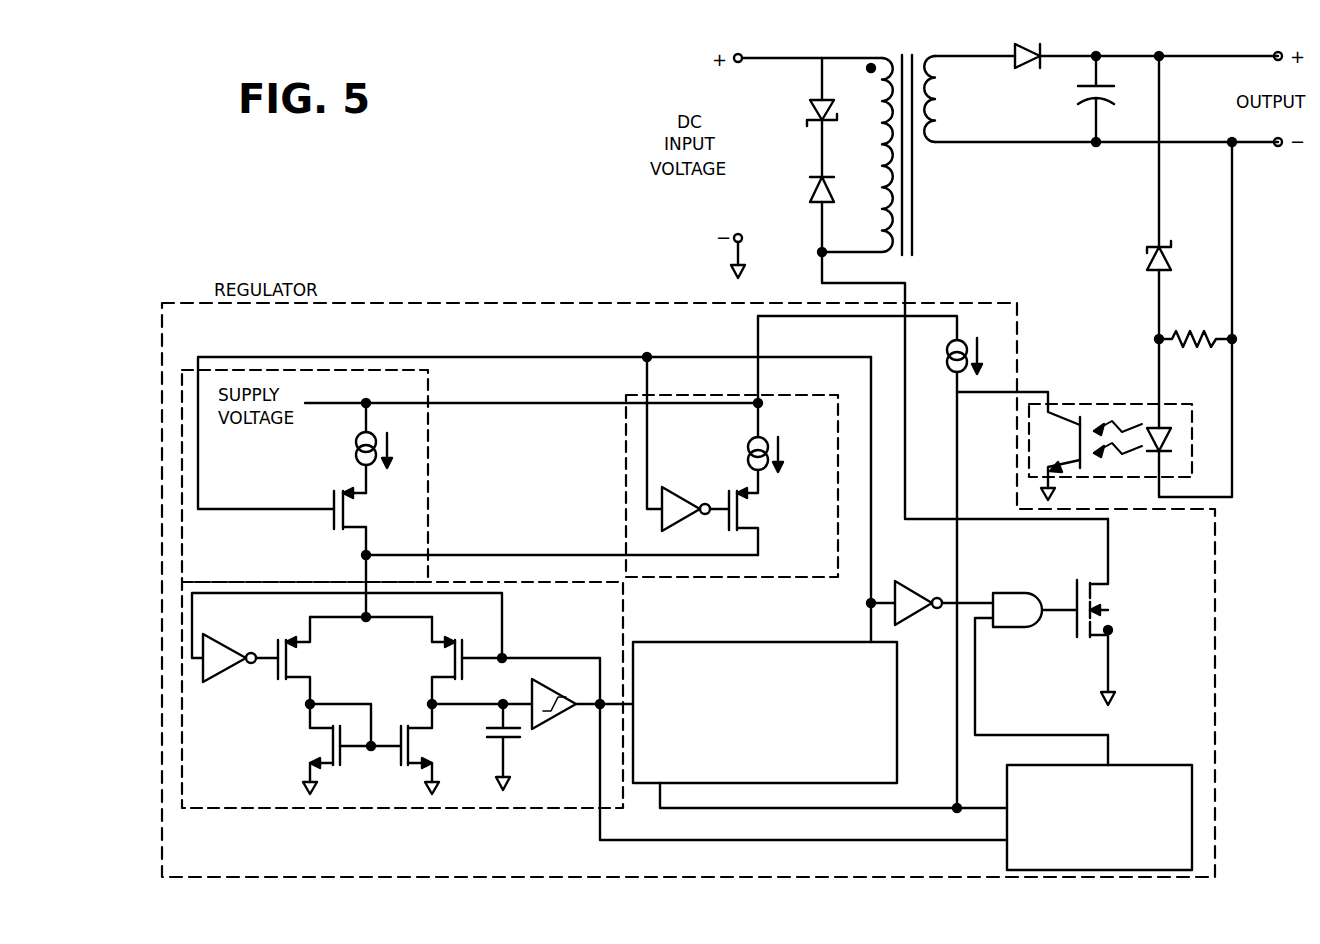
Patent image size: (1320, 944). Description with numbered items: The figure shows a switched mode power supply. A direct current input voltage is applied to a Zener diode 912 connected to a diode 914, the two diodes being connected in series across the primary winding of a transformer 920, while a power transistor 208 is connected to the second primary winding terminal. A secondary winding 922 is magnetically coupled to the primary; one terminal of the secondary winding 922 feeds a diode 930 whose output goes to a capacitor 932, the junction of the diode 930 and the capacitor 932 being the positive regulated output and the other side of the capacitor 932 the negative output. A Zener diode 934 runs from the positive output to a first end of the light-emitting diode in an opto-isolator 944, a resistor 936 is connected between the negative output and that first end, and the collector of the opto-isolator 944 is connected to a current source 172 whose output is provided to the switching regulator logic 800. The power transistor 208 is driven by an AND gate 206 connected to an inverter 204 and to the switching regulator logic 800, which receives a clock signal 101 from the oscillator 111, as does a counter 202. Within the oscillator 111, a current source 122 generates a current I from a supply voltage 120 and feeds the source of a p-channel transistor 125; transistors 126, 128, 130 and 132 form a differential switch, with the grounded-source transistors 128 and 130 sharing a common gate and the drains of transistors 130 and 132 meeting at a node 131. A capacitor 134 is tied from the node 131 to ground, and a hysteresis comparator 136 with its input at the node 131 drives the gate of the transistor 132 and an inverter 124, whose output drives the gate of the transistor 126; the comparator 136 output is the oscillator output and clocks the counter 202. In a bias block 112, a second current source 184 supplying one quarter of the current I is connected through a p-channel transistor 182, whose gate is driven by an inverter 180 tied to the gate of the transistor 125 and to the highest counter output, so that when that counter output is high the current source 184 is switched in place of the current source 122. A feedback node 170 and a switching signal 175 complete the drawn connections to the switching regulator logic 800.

The clock signal 101 is at (963, 869).
The oscillator 111 is at (402, 695).
The bias current circuit 112 is at (710, 486).
The supply voltage 120 is at (531, 391).
The current source 122 is at (360, 448).
The inverter 124 is at (240, 665).
The p-channel MOSFET transistor 125 is at (359, 521).
The p-channel MOSFET transistor 126 is at (305, 660).
The n-channel MOSFET transistor 128 is at (313, 749).
The n-channel MOSFET transistor 130 is at (427, 749).
The node 131 is at (480, 696).
The p-channel MOSFET transistor 132 is at (436, 660).
The capacitor 134 is at (517, 747).
The hysteresis comparator 136 is at (582, 709).
The feedback node 170 is at (833, 797).
The current source 172 is at (887, 562).
The switching signal 175 is at (1090, 723).
The inverter 180 is at (695, 519).
The p-channel MOSFET 182 is at (755, 512).
The second current source 184 is at (757, 394).
The counter 202 is at (765, 712).
The inverter 204 is at (932, 597).
The AND gate 206 is at (1041, 667).
The power transistor 208 is at (1111, 612).
The switching regulator logic 800 is at (1099, 817).
The Zener diode 912 is at (803, 113).
The diode 914 is at (802, 189).
The transformer 920 is at (870, 142).
The secondary winding 922 is at (952, 99).
The diode 930 is at (1026, 43).
The capacitor 932 is at (1085, 99).
The Zener diode 934 is at (1139, 255).
The resistor 936 is at (1195, 329).
The opto-isolator 944 is at (1074, 439).